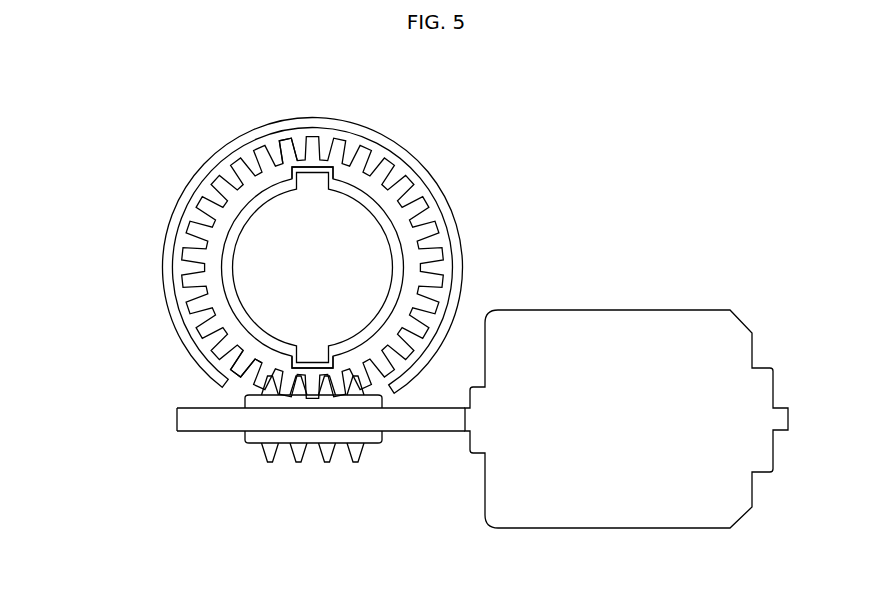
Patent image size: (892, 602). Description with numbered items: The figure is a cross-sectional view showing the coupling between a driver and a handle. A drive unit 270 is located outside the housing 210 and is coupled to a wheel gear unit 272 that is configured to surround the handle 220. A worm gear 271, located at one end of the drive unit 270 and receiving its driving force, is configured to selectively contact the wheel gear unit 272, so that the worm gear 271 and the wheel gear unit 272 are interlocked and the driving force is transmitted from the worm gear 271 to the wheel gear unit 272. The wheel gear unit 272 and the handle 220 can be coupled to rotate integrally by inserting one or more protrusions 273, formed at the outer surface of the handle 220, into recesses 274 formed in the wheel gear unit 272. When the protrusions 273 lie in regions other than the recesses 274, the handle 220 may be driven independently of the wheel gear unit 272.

The housing 210 is at (432, 183).
The handle 220 is at (272, 257).
The drive unit 270 is at (622, 322).
The worm gear 271 is at (359, 453).
The wheel gear unit 272 is at (356, 150).
The protrusion 273 is at (316, 352).
The recess 274 is at (291, 152).